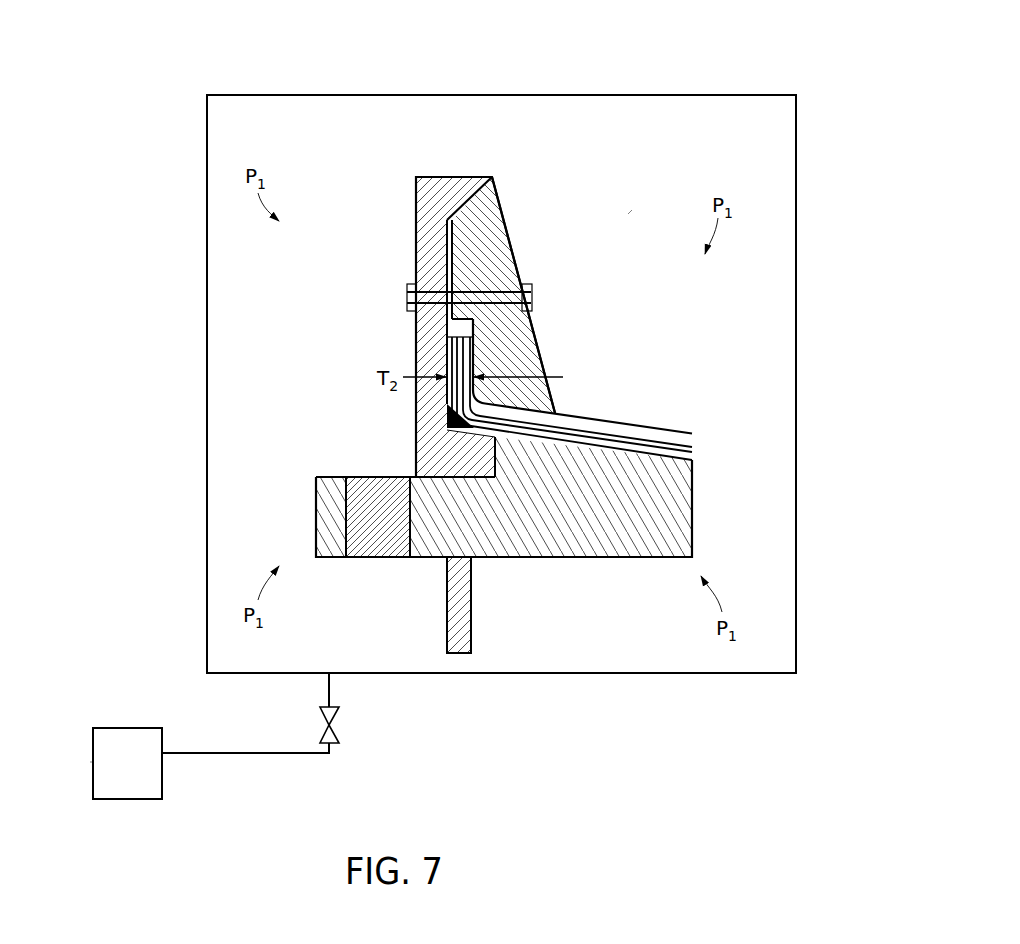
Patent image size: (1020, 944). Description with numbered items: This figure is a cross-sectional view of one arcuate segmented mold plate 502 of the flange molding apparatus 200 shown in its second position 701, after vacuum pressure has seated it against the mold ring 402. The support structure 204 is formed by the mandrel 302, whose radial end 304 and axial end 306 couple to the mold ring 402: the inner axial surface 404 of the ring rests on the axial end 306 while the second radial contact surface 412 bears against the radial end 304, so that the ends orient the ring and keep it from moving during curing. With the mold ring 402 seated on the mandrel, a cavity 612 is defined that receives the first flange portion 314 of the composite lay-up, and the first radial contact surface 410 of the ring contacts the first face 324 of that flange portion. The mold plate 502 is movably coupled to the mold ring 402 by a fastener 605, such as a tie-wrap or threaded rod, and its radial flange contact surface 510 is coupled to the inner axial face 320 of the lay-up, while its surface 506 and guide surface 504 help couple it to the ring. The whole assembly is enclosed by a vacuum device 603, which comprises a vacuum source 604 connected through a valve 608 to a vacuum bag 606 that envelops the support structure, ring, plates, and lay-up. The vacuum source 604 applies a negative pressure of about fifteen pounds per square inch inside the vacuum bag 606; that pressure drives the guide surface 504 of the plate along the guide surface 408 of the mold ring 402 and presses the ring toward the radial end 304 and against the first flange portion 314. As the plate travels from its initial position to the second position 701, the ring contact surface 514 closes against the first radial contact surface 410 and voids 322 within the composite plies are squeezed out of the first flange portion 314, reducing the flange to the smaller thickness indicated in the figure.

The flange molding apparatus 200 is at (337, 366).
The support structure 204 is at (694, 517).
The mandrel 302 is at (425, 558).
The radial end 304 is at (515, 463).
The axial end 306 is at (478, 470).
The first flange portion 314 is at (450, 350).
The inner axial face 320 is at (480, 373).
The voids 322 is at (472, 345).
The first face 324 is at (447, 412).
The mold ring 402 is at (414, 218).
The inner axial surface 404 is at (416, 477).
The guide surface 408 is at (460, 177).
The first radial contact surface 410 is at (447, 268).
The second radial contact surface 412 is at (452, 440).
The arcuate segmented mold plate 502 is at (513, 197).
The guide surface 504 is at (484, 177).
The surface 506 is at (556, 412).
The radial flange contact surface 510 is at (478, 342).
The ring contact surface 514 is at (455, 262).
The vacuum source 604 is at (125, 728).
The fastener 605 is at (531, 297).
The vacuum bag 606 is at (719, 95).
The valve 608 is at (337, 722).
The cavity 612 is at (447, 330).
The vacuum device 603 is at (79, 764).
The second position 701 is at (631, 211).